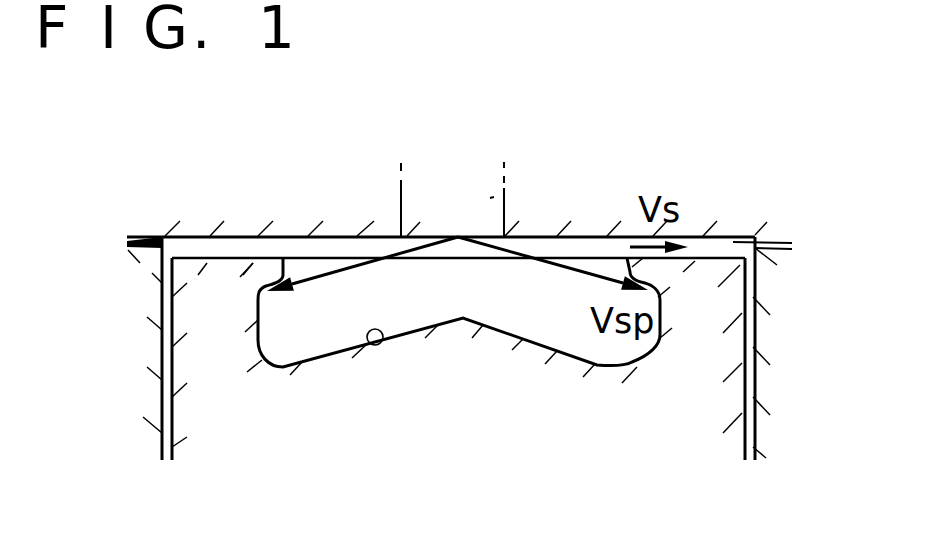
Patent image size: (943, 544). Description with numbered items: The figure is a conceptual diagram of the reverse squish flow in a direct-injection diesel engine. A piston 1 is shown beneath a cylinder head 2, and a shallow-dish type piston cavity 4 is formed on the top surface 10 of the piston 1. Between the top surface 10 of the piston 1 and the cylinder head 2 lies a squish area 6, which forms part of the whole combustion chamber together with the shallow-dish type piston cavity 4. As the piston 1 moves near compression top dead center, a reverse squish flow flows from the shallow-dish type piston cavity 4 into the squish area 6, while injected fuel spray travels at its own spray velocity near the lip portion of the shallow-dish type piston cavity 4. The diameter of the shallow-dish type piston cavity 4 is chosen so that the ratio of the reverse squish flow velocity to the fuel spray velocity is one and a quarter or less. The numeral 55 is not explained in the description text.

The piston 1 is at (203, 308).
The cylinder head 2 is at (352, 207).
The shallow-dish type piston cavity 4 is at (384, 345).
The squish area 6 is at (773, 250).
The top surface 10 is at (240, 258).
The fuel injector pin 55 is at (504, 198).